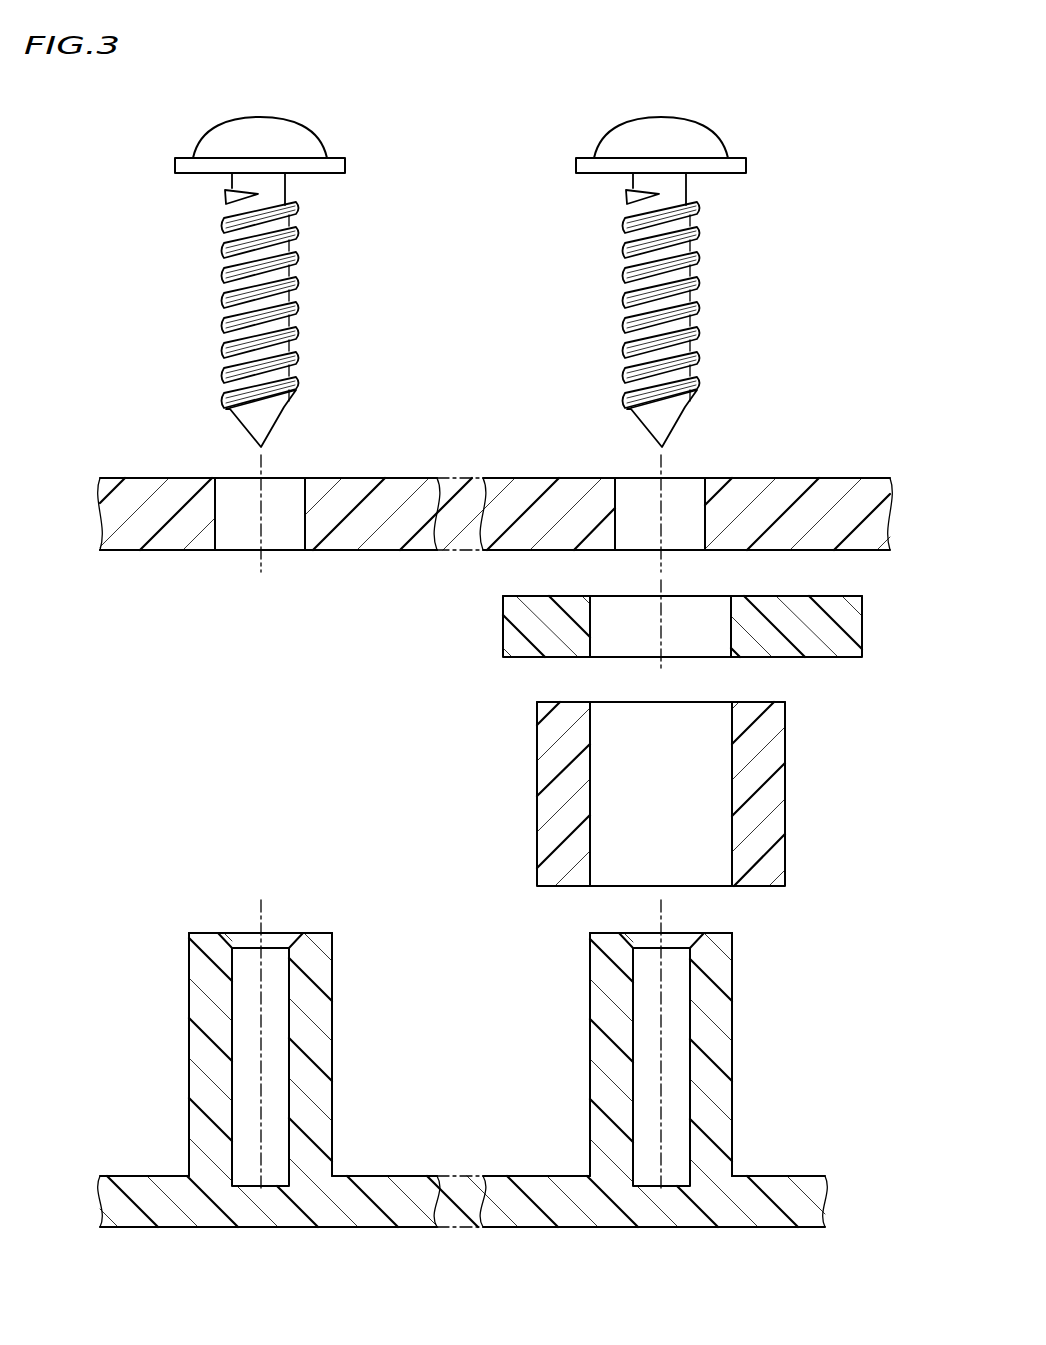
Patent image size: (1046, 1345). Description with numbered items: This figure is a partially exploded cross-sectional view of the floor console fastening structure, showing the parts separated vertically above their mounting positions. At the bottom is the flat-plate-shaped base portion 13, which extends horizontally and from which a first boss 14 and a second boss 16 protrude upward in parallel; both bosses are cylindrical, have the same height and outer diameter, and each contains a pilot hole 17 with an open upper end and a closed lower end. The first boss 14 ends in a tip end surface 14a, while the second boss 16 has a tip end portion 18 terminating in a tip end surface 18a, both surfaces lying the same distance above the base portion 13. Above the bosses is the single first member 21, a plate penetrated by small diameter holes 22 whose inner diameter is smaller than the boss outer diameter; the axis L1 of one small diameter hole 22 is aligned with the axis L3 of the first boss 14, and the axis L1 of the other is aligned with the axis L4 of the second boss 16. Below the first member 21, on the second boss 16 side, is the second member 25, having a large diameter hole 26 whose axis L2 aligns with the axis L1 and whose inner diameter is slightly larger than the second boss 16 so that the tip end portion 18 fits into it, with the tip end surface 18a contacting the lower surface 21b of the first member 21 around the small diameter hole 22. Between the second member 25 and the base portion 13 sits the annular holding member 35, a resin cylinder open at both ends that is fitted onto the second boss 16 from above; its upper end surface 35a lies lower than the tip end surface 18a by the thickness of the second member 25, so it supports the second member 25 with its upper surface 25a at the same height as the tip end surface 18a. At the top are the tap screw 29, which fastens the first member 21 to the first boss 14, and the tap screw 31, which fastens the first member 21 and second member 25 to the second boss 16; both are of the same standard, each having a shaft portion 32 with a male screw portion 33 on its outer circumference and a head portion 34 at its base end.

The base portion 13 is at (463, 1091).
The first boss 14 is at (268, 1040).
The tip end surface of first boss 14a is at (318, 933).
The second boss 16 is at (660, 1040).
The pilot hole 17 is at (238, 1114).
The tip end portion of second boss 18 is at (733, 940).
The tip end surface of second boss 18a is at (604, 933).
The first member 21 is at (495, 521).
The lower surface of first member 21b is at (147, 553).
The small diameter hole 22 is at (303, 488).
The second member 25 is at (671, 632).
The upper surface of second member 25a is at (815, 597).
The large diameter hole 26 is at (733, 640).
The tap screw 29 is at (261, 310).
The tap screw 31 is at (662, 310).
The shaft portion 32 is at (493, 264).
The male screw portion 33 is at (224, 313).
The head portion 34 is at (220, 134).
The holding member 35 is at (690, 778).
The upper end surface of holding member 35a is at (762, 702).
The axis of small diameter hole L1 is at (258, 470).
The axis of large diameter hole L2 is at (665, 587).
The axis of first boss L3 is at (258, 925).
The axis of second boss L4 is at (665, 925).